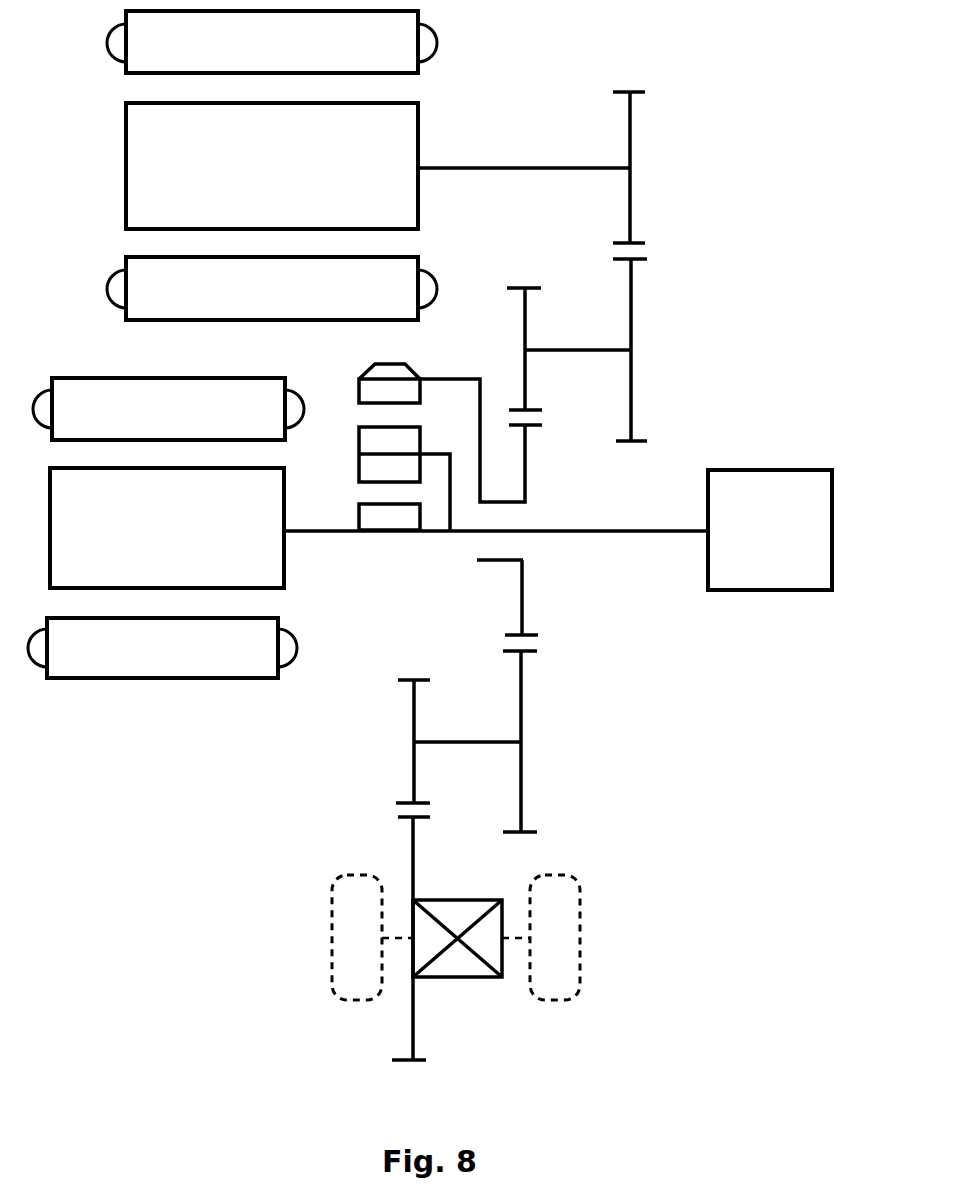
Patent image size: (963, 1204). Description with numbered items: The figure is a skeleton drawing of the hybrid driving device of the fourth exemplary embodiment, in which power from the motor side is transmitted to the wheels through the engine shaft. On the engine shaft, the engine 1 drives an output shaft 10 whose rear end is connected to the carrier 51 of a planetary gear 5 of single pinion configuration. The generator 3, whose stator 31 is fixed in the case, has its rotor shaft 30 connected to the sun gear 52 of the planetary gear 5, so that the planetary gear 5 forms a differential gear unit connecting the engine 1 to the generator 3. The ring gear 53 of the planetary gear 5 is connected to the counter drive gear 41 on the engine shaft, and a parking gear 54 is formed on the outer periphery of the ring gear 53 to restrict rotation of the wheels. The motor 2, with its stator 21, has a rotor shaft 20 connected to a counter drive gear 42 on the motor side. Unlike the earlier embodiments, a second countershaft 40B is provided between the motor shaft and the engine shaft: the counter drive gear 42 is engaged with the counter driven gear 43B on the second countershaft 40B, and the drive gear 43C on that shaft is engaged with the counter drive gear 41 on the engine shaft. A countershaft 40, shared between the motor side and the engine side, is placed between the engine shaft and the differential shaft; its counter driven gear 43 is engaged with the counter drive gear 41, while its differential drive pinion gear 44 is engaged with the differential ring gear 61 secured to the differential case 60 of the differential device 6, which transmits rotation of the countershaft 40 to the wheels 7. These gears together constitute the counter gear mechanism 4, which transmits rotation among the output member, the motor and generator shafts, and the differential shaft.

The engine 1 is at (767, 470).
The output shaft 10 is at (622, 528).
The motor 2 is at (100, 163).
The rotor shaft 20 is at (498, 165).
The stator 21 is at (238, 320).
The generator 3 is at (158, 692).
The rotor shaft 30 is at (313, 533).
The stator 31 is at (207, 680).
The counter gear mechanism 4 is at (618, 619).
The countershaft 40 is at (468, 743).
The second countershaft 40B is at (567, 351).
The counter drive gear 41 is at (525, 617).
The counter drive gear 42 is at (632, 112).
The counter driven gear 43 is at (523, 668).
The counter driven gear 43B is at (633, 408).
The drive gear 43C is at (527, 322).
The drive pinion gear 44 is at (413, 697).
The planetary gear 5 is at (382, 552).
The carrier 51 is at (435, 453).
The sun gear 52 is at (395, 533).
The ring gear 53 is at (359, 393).
The parking gear 54 is at (405, 372).
The differential device 6 is at (518, 883).
The differential case 60 is at (453, 978).
The differential ring gear 61 is at (410, 852).
The drive wheels 7 is at (332, 942).